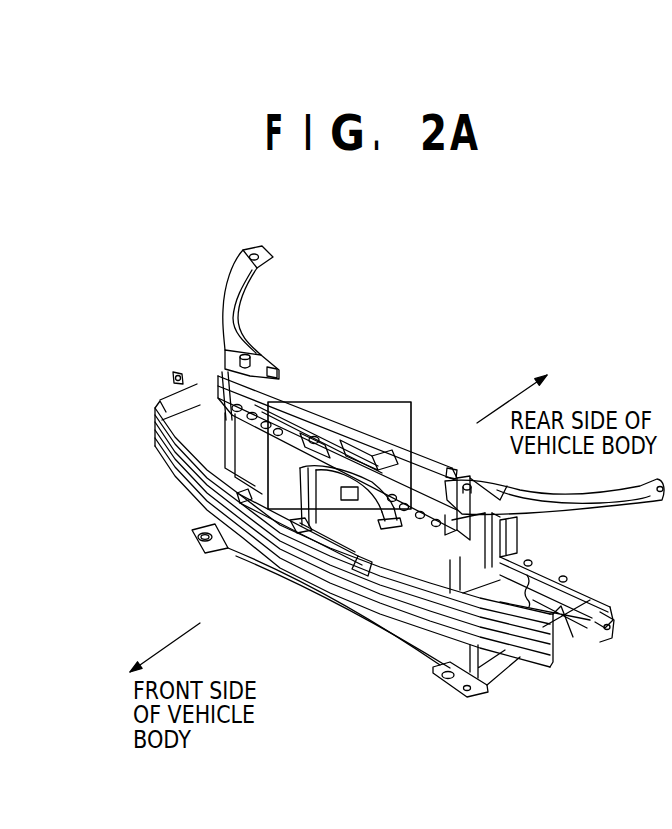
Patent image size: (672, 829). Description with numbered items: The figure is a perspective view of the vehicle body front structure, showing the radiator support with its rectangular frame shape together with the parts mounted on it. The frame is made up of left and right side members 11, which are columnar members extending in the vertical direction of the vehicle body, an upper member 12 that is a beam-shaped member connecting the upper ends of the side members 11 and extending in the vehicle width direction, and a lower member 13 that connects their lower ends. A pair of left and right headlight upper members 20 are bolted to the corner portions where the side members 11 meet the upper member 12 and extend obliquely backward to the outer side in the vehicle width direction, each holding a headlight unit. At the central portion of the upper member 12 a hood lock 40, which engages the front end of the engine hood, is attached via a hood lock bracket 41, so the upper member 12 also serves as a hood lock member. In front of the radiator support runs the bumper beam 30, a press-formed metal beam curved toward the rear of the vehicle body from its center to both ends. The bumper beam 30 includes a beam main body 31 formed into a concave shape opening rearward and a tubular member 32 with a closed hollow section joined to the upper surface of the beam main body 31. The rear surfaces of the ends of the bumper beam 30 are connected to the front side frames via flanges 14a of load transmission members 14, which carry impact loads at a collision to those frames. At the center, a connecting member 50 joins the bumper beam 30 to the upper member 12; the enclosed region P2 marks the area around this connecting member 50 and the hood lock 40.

The side member 11 is at (183, 488).
The upper member 12 is at (296, 391).
The lower member 13 is at (298, 593).
The load transmission member 14 is at (192, 402).
The flange 14a is at (177, 372).
The headlight upper member 20 is at (258, 249).
The bumper beam 30 is at (306, 615).
The beam main body 31 is at (328, 588).
The tubular member 32 is at (354, 563).
The hood lock 40 is at (356, 455).
The hood lock bracket 41 is at (330, 422).
The connecting member 50 is at (314, 525).
The region P2 is at (392, 402).